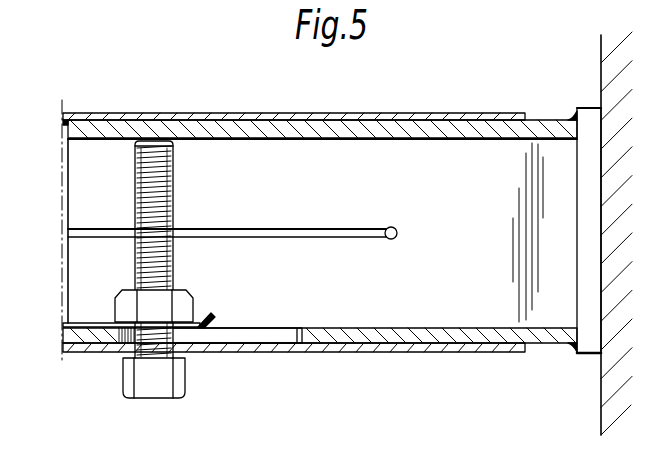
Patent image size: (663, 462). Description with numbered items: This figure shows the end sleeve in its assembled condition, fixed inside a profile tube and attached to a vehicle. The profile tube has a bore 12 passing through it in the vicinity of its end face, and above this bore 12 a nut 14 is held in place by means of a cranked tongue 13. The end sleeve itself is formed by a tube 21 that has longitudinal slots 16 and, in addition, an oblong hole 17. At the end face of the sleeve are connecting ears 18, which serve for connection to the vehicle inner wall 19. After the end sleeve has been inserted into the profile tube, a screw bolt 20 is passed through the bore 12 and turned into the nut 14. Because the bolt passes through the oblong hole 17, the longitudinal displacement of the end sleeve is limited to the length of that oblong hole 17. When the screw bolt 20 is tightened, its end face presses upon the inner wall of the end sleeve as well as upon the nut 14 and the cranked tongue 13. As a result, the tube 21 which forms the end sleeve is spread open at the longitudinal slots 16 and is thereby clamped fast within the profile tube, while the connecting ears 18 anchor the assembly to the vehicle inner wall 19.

The bore 12 is at (188, 346).
The cranked tongue 13 is at (86, 323).
The nut 14 is at (185, 301).
The longitudinal slots 16 is at (399, 226).
The oblong hole 17 is at (275, 328).
The connecting ears 18 is at (592, 347).
The vehicle inner wall 19 is at (600, 38).
The screw bolt 20 is at (173, 197).
The tube 21 is at (453, 325).